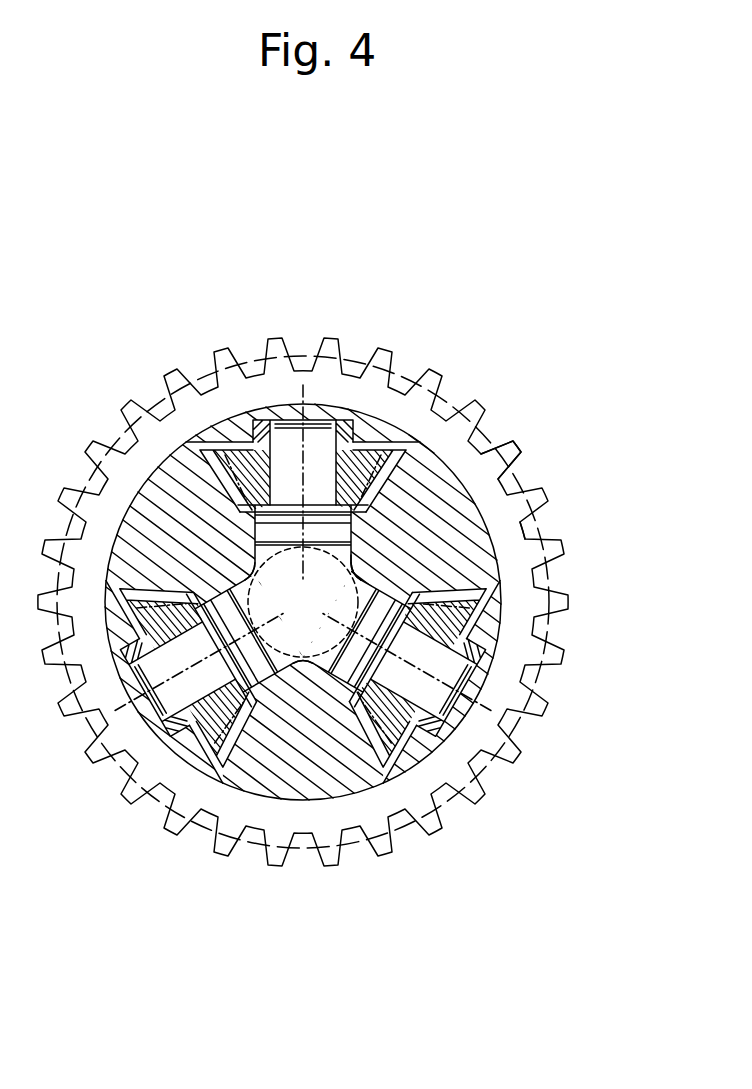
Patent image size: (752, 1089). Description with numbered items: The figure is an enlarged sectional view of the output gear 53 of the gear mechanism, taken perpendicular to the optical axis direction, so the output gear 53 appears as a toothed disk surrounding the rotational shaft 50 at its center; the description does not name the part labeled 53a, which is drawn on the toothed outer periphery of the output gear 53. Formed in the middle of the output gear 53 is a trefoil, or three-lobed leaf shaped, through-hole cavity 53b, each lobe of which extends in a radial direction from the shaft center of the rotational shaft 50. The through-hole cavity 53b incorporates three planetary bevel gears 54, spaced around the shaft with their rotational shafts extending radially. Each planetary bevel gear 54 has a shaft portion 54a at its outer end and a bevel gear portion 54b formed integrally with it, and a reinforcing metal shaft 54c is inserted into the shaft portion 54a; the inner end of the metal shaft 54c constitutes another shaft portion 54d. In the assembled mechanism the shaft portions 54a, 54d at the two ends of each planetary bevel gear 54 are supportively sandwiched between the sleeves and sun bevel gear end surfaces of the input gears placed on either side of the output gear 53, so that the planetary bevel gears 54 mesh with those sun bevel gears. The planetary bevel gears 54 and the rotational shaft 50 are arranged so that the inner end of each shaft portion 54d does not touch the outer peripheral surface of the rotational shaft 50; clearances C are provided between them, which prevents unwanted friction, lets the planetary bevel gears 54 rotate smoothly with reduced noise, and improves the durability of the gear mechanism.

The rotational shaft 50 is at (300, 670).
The output gear 53 is at (381, 350).
The gear tooth 53a is at (512, 448).
The through-hole cavity 53b is at (354, 590).
The planetary bevel gear 54 is at (302, 560).
The shaft portion 54a is at (222, 467).
The bevel gear portion 54b is at (208, 470).
The reinforcing metal shaft 54c is at (318, 445).
The shaft portion 54d is at (403, 447).
The clearance C is at (345, 612).